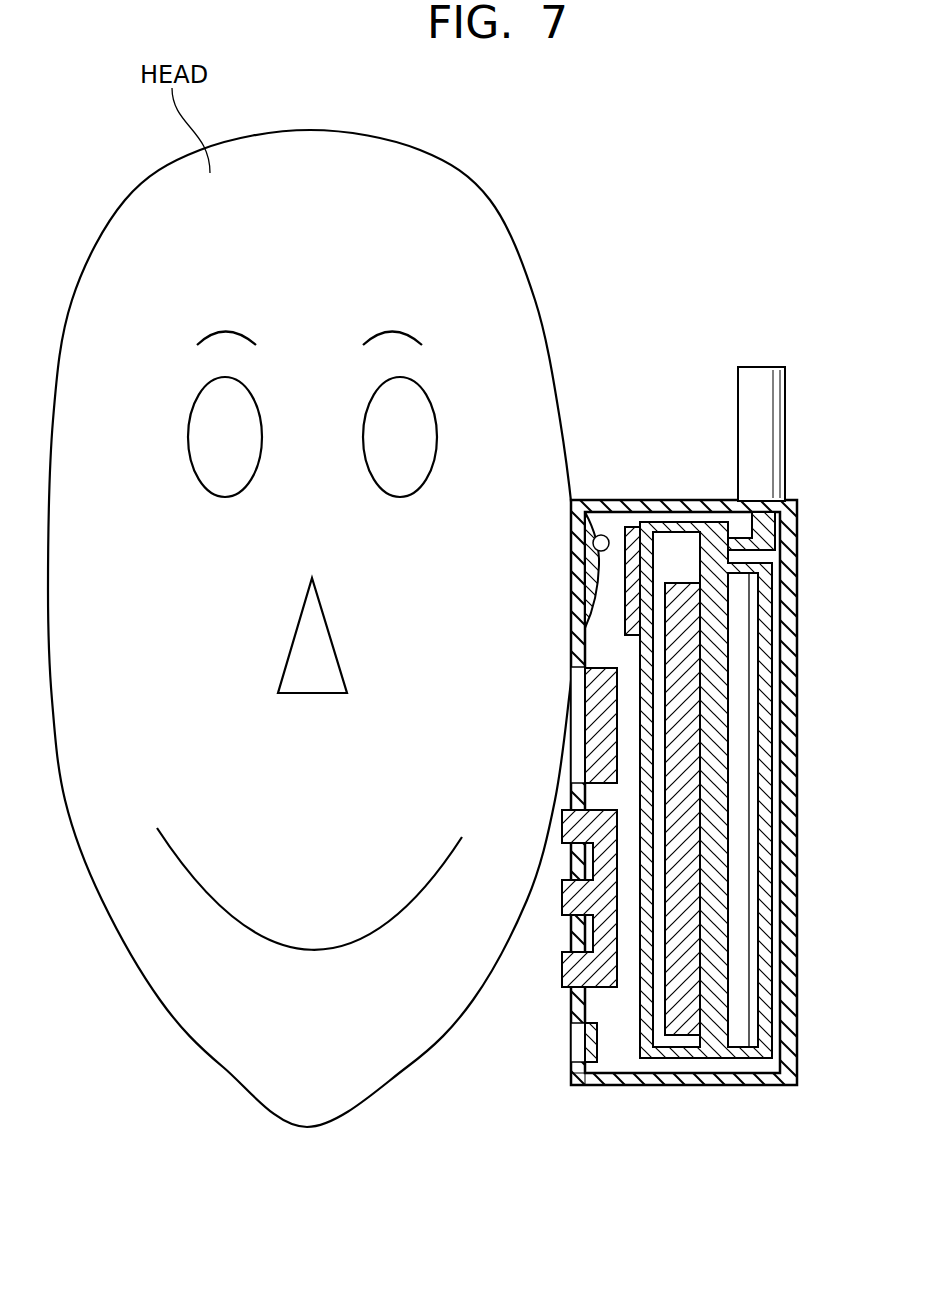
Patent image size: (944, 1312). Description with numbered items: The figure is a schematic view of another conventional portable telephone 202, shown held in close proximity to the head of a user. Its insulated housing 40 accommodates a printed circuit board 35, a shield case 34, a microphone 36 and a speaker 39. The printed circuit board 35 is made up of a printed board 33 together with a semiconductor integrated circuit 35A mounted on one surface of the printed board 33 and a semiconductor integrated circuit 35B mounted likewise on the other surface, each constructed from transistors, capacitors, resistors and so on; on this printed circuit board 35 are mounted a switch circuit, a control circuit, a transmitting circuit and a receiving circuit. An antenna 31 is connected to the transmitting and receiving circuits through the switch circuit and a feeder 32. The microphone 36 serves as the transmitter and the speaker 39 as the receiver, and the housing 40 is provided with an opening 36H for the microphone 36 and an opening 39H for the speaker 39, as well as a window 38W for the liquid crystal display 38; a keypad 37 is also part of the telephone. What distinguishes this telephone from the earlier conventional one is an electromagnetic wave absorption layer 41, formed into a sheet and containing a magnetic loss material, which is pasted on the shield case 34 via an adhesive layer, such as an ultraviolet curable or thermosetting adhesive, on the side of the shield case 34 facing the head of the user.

The portable telephone 202 is at (672, 385).
The antenna 31 is at (767, 367).
The feeder 32 is at (740, 543).
The printed board 33 is at (700, 563).
The shield case 34 is at (797, 1088).
The printed circuit board 35 is at (701, 883).
The semiconductor integrated circuit 35A is at (685, 1030).
The semiconductor integrated circuit 35B is at (751, 864).
The microphone 36 is at (603, 1052).
The opening 36H is at (572, 1049).
The keypad 37 is at (565, 975).
The liquid crystal display 38 is at (598, 752).
The window 38W is at (580, 711).
The speaker 39 is at (580, 547).
The opening 39H is at (580, 568).
The insulated housing 40 is at (571, 1078).
The electromagnetic wave absorption layer 41 is at (631, 527).